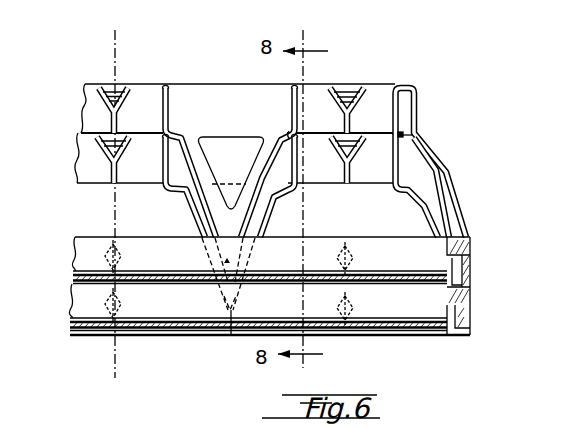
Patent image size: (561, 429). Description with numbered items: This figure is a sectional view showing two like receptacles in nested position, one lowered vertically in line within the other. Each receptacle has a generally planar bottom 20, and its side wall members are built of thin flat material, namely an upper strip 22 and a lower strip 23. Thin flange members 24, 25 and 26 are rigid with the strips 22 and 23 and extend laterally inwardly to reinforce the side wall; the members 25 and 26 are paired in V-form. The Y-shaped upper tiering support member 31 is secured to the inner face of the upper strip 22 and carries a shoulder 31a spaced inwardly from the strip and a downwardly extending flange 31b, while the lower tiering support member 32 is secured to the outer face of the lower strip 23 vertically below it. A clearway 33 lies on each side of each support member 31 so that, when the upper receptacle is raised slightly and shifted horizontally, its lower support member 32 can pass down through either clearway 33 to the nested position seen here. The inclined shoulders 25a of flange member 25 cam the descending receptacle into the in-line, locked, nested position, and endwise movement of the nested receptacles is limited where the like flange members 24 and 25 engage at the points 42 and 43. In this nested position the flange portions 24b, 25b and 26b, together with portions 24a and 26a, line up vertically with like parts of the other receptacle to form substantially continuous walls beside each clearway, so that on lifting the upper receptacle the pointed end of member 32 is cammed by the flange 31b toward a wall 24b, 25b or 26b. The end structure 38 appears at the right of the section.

The bottom 20 is at (186, 296).
The upper strip 22 is at (50, 167).
The lower strip 23 is at (261, 286).
The end flange member 24 is at (420, 148).
The flange portion 24a is at (417, 140).
The flange portion 24b is at (392, 88).
The flange member 25 is at (253, 198).
The inclined shoulder 25a is at (267, 172).
The flange portion 25b is at (293, 88).
The flange member 26 is at (174, 145).
The flange portion 26a is at (168, 130).
The flange portion 26b is at (163, 87).
The upper tiering support member 31 is at (212, 130).
The shoulder 31a is at (110, 85).
The downwardly extending flange 31b is at (112, 121).
The lower tiering support member 32 is at (126, 258).
The clearway 33 is at (140, 146).
The end flange 38 is at (462, 300).
The engagement point 42 is at (408, 136).
The engagement point 43 is at (295, 138).